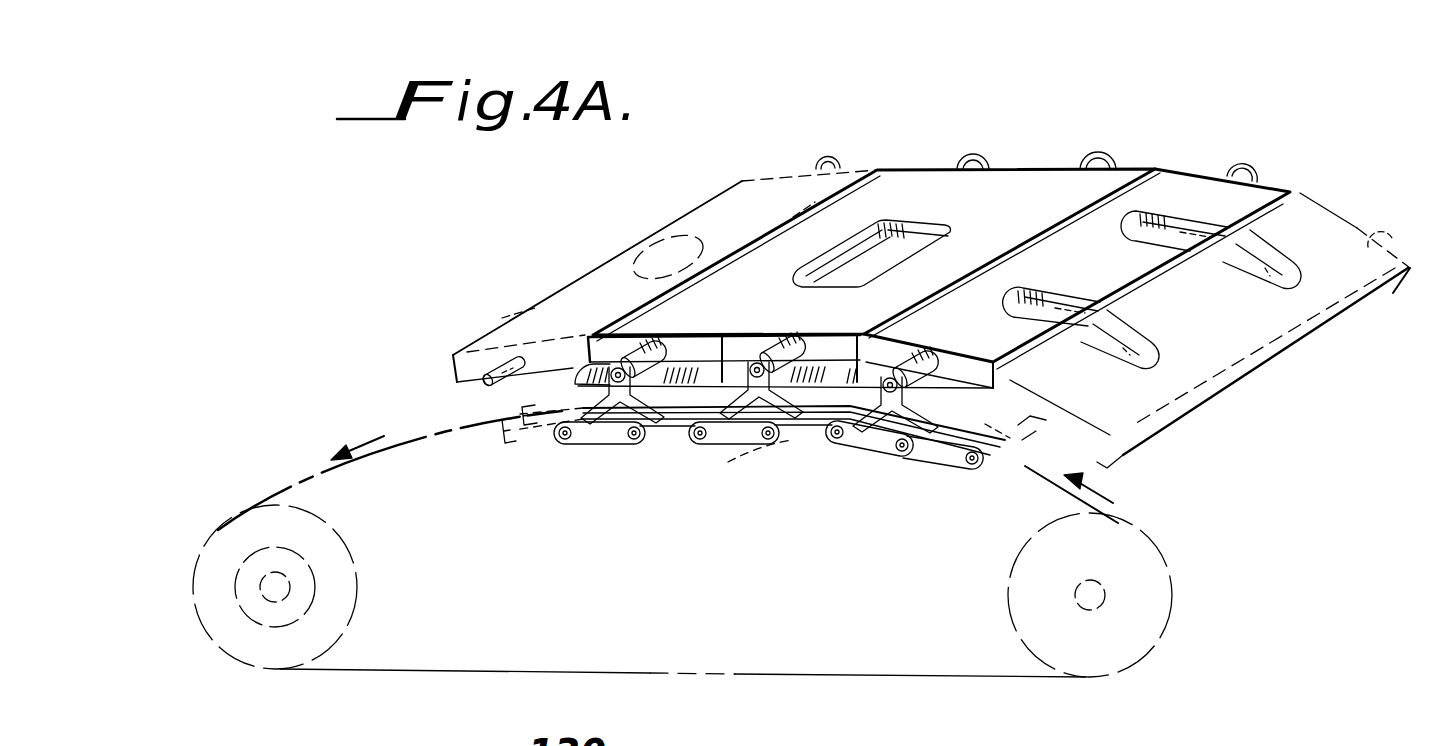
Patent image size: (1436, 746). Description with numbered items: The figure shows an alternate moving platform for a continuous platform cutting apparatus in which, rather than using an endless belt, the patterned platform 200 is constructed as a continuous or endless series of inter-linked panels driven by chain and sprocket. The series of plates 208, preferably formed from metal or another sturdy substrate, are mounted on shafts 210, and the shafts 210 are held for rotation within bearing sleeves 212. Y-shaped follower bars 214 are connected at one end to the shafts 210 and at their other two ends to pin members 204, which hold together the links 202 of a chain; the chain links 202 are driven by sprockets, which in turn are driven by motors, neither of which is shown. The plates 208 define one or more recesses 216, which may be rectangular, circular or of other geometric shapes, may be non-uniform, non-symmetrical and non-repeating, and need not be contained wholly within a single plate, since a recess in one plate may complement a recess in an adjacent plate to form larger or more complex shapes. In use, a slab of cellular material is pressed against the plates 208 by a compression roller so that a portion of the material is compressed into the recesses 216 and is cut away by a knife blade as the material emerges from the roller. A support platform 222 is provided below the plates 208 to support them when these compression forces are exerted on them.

The patterned platform 200 is at (1204, 153).
The links 202 is at (926, 450).
The pin members 204 is at (745, 350).
The plates 208 is at (980, 178).
The shafts 210 is at (664, 462).
The bearing sleeves 212 is at (698, 380).
The Y-shaped follower bars 214 is at (820, 382).
The recesses 216 is at (656, 253).
The support platform 222 is at (818, 373).